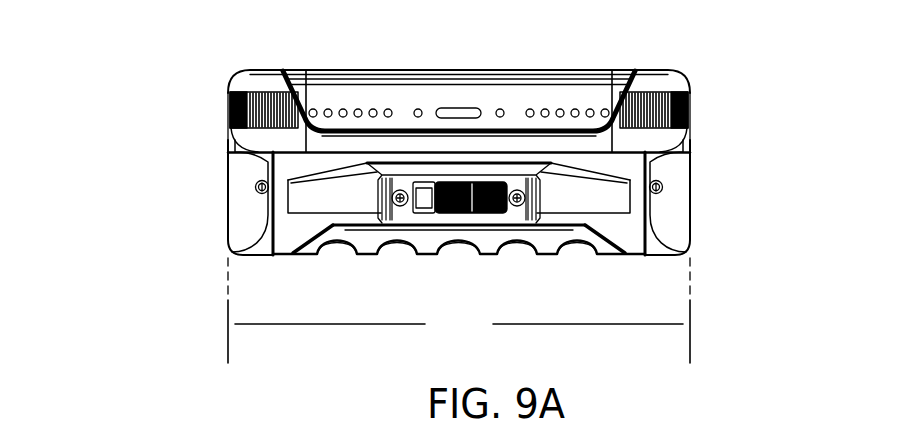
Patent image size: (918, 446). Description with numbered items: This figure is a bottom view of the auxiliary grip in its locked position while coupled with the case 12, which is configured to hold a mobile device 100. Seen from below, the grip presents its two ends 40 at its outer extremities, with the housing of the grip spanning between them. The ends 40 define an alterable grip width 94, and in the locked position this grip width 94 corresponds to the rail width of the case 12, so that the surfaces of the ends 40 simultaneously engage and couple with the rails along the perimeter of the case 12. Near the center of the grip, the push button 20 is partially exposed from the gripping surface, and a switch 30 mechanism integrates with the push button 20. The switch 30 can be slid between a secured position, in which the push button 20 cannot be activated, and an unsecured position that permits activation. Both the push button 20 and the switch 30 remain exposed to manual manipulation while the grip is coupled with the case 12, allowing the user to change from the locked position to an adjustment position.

The mobile device 100 is at (367, 98).
The case 12 is at (243, 87).
The ends 40 is at (243, 162).
The push button 20 is at (388, 198).
The switch 30 is at (528, 213).
The grip width 94 is at (459, 310).